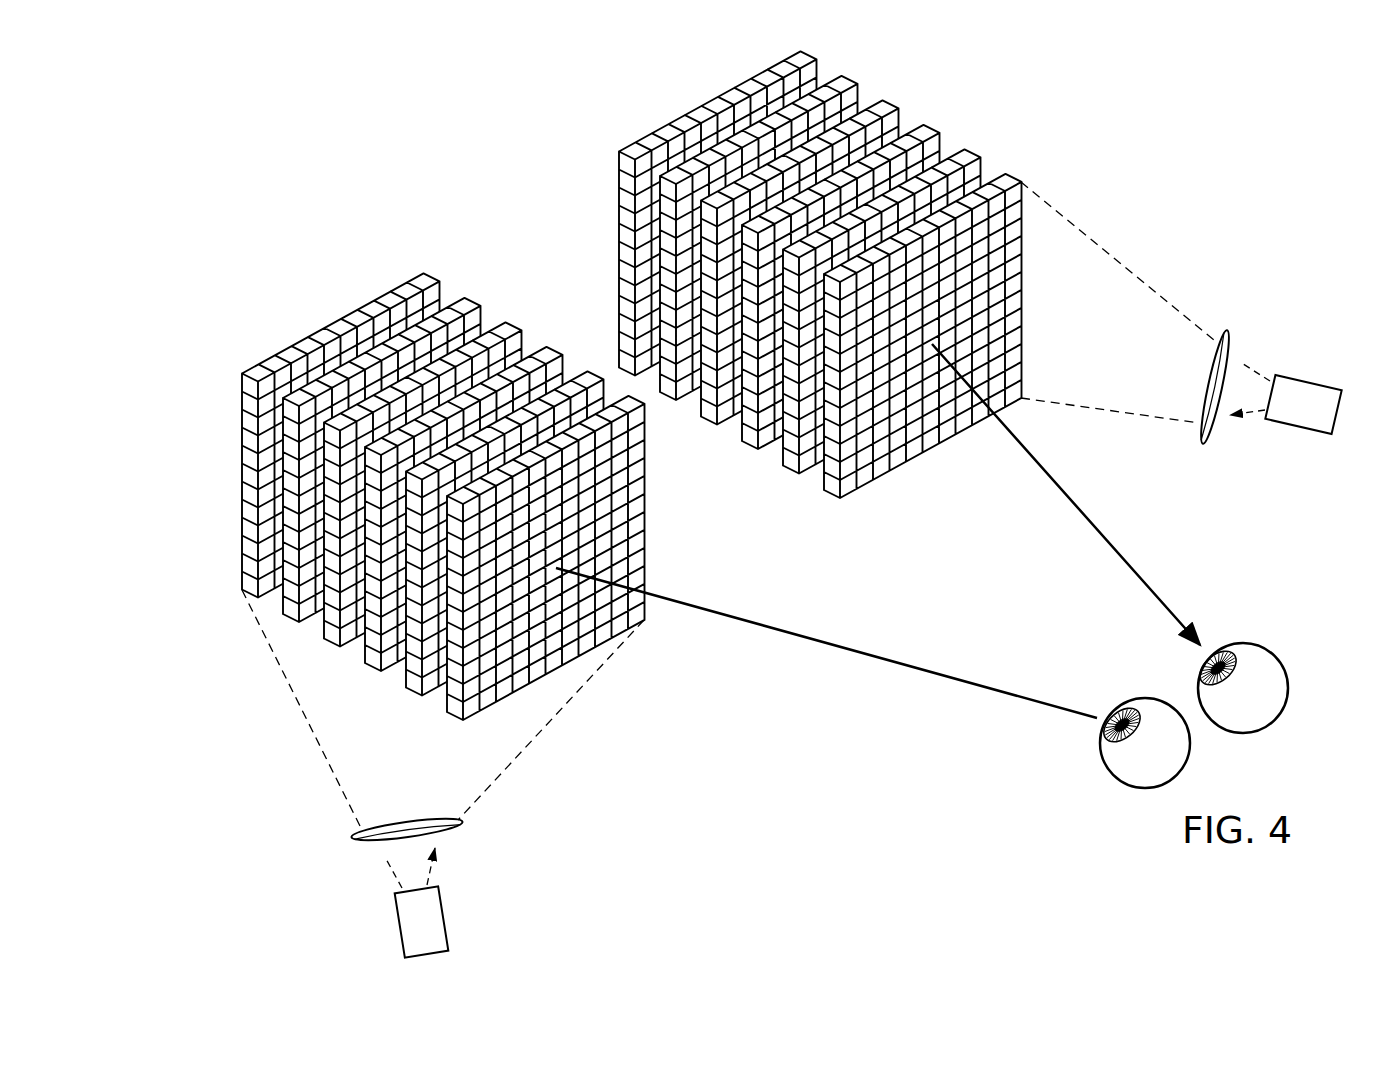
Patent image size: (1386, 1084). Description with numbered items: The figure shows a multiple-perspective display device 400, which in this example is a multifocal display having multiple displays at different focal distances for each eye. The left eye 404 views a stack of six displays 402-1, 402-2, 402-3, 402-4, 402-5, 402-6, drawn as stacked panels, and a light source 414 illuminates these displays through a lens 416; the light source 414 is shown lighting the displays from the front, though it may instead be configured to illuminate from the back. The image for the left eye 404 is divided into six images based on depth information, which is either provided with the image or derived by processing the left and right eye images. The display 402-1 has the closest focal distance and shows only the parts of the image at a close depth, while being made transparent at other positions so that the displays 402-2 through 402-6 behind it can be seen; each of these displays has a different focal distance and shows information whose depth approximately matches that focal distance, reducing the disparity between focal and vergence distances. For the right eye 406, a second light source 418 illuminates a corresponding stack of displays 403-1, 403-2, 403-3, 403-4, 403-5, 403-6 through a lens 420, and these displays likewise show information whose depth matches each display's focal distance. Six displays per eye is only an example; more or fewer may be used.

The multiple-perspective display device 400 is at (437, 183).
The display 402-1 is at (648, 570).
The display 402-2 is at (414, 694).
The display 402-3 is at (554, 352).
The display 402-4 is at (512, 329).
The display 402-5 is at (472, 304).
The display 402-6 is at (242, 492).
The display 403-1 is at (1006, 186).
The display 403-2 is at (792, 478).
The display 403-3 is at (939, 136).
The display 403-4 is at (714, 431).
The display 403-5 is at (857, 88).
The display 403-6 is at (712, 117).
The left eye 404 is at (1100, 746).
The right eye 406 is at (1289, 690).
The light source 414 is at (403, 930).
The lens 416 is at (352, 842).
The light source 418 is at (1310, 378).
The lens 420 is at (1228, 334).